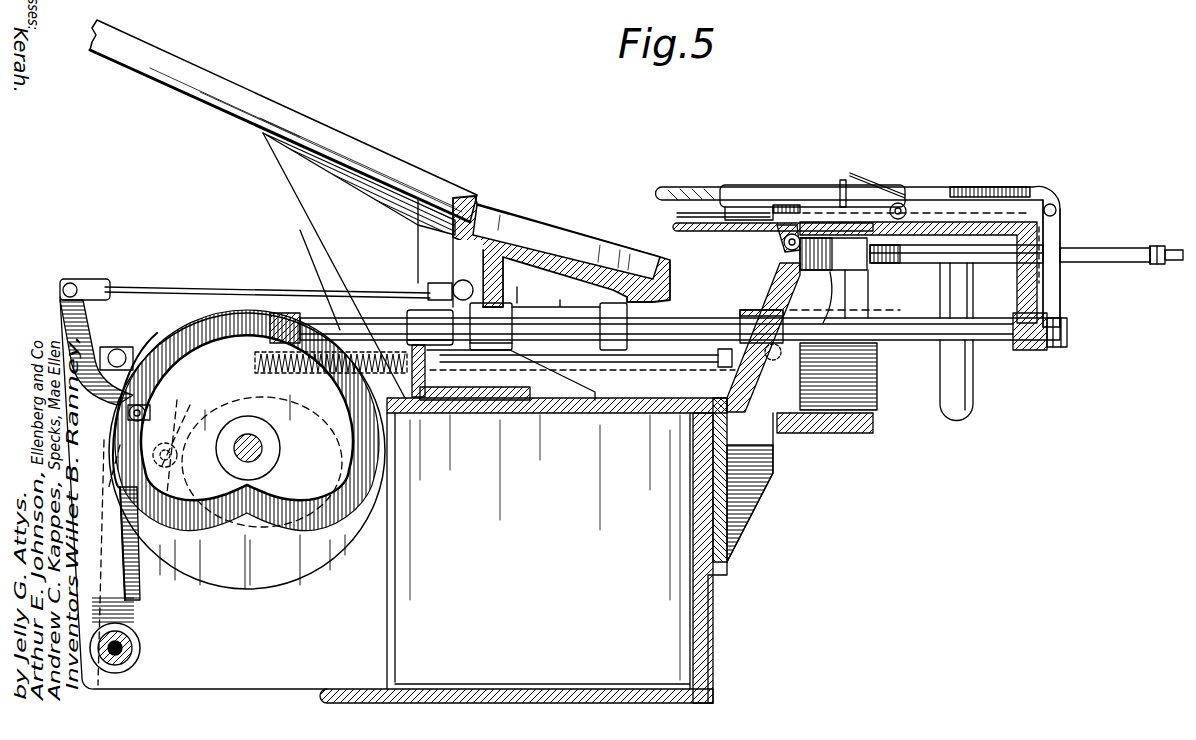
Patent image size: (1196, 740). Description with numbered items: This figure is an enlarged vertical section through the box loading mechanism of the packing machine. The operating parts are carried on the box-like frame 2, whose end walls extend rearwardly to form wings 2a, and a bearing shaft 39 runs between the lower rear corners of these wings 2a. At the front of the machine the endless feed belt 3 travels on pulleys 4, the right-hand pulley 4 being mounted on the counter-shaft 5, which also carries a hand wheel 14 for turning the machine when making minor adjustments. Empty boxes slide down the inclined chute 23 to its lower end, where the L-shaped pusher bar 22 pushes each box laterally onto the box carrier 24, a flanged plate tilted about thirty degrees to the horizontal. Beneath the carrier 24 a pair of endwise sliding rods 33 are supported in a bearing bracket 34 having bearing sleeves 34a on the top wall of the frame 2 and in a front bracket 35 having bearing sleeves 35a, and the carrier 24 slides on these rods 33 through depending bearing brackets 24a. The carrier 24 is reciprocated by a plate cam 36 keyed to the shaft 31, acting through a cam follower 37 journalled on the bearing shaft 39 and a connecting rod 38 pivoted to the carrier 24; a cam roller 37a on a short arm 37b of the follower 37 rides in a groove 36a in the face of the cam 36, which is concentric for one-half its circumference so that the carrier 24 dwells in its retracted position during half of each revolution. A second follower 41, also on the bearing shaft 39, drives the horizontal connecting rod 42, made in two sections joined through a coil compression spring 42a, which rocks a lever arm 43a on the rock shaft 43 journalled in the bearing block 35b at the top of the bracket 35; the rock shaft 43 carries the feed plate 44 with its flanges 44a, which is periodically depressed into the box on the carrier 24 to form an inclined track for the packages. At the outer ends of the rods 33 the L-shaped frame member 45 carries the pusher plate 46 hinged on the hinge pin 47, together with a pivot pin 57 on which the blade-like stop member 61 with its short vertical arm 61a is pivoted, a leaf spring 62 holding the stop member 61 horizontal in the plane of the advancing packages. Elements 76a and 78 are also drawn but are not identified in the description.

The frame 2 is at (715, 613).
The wings 2a is at (193, 493).
The endless feed belt 3 is at (876, 228).
The pulley 4 is at (878, 400).
The counter-shaft 5 is at (976, 318).
The hand wheel 14 is at (957, 413).
The pusher bar 22 is at (533, 218).
The inclined chute 23 is at (413, 173).
The box carrier 24 is at (540, 305).
The bearing brackets 24a is at (605, 312).
The shaft 31 is at (266, 449).
The sliding rods 33 is at (680, 323).
The bearing bracket 34 is at (440, 386).
The bearing sleeves 34a is at (412, 322).
The front bracket 35 is at (740, 398).
The bearing sleeves 35a is at (753, 313).
The bearing block 35b is at (837, 261).
The plate cam 36 is at (315, 563).
The groove 36a is at (124, 447).
The cam follower 37 is at (138, 575).
The cam roller 37a is at (130, 420).
The short arm 37b is at (129, 412).
The connecting rod 38 is at (256, 299).
The bearing shaft 39 is at (140, 650).
The follower 41 is at (97, 395).
The connecting rod 42 is at (200, 337).
The coil compression spring 42a is at (300, 425).
The rock shaft 43 is at (784, 248).
The lever arm 43a is at (845, 311).
The feed plate 44 is at (700, 232).
The flanges 44a is at (677, 215).
The L-shaped frame member 45 is at (1053, 293).
The pusher plate 46 is at (823, 200).
The hinge pin 47 is at (904, 205).
The pivot pin 57 is at (1057, 207).
The stop member 61 is at (672, 192).
The vertical arm 61a is at (1062, 226).
The leaf spring 62 is at (852, 176).
The nut 76a is at (1147, 264).
The rod 78 is at (1114, 250).